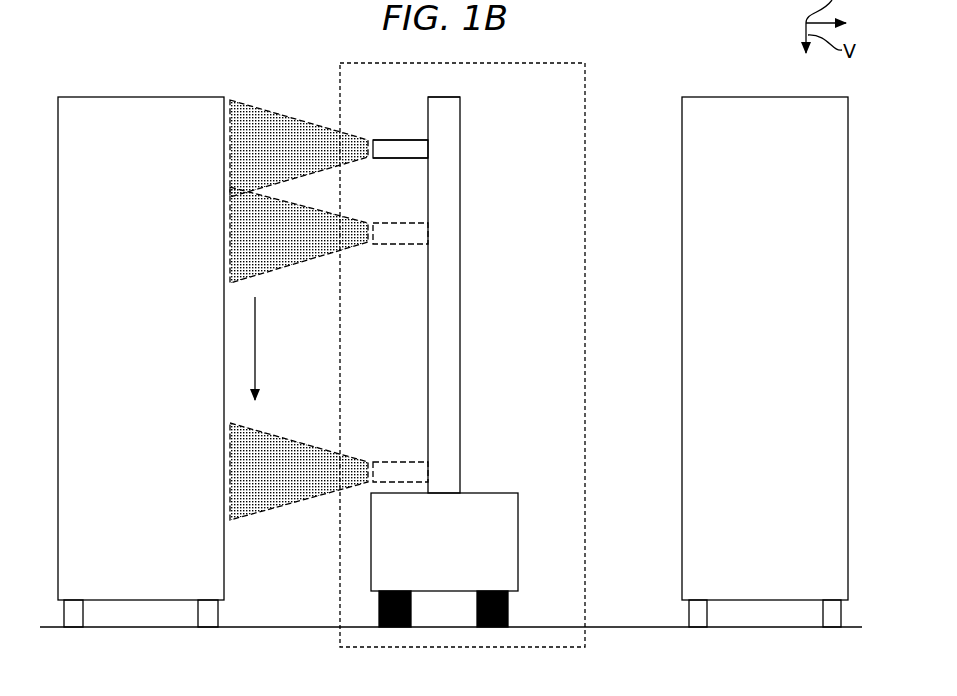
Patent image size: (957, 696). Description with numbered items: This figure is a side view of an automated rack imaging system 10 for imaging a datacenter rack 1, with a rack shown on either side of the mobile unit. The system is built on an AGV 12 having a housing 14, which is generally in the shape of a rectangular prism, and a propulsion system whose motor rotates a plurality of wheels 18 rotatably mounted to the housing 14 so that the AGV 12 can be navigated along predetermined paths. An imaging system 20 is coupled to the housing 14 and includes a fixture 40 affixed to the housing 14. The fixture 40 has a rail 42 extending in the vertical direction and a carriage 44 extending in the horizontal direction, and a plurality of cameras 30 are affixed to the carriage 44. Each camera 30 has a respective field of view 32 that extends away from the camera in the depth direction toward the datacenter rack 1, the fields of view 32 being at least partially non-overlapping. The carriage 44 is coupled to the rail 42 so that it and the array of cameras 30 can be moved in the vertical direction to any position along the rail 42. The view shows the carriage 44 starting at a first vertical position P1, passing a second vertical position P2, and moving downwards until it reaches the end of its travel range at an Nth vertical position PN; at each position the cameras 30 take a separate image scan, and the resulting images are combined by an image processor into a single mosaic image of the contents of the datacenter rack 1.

The datacenter rack 1 is at (130, 97).
The automated rack imaging system 10 is at (330, 68).
The AGV 12 is at (524, 537).
The housing 14 is at (493, 493).
The wheels 18 is at (508, 610).
The imaging system 20 is at (538, 288).
The cameras 30 is at (373, 138).
The field of view 32 is at (282, 113).
The fixture 40 is at (466, 340).
The rail 42 is at (444, 97).
The carriage 44 is at (383, 160).
The first vertical position P1 is at (402, 140).
The second vertical position P2 is at (402, 223).
The Nth vertical position PN is at (396, 462).